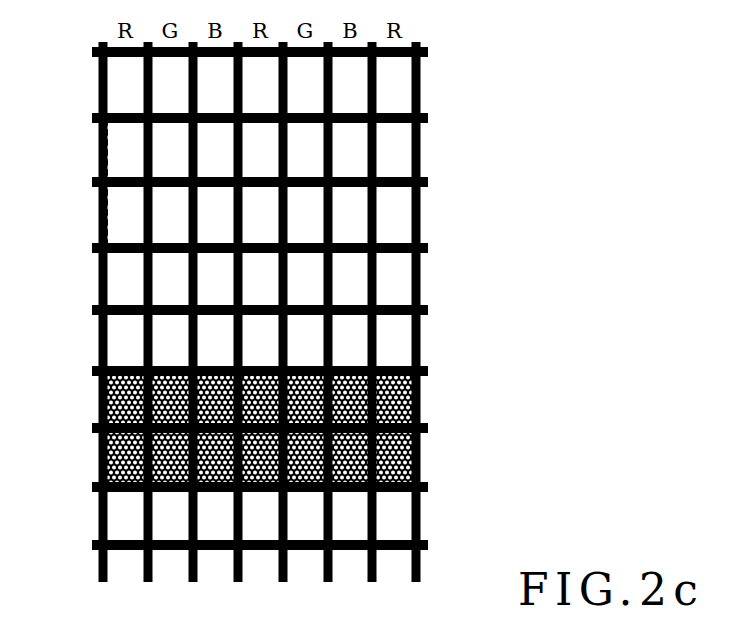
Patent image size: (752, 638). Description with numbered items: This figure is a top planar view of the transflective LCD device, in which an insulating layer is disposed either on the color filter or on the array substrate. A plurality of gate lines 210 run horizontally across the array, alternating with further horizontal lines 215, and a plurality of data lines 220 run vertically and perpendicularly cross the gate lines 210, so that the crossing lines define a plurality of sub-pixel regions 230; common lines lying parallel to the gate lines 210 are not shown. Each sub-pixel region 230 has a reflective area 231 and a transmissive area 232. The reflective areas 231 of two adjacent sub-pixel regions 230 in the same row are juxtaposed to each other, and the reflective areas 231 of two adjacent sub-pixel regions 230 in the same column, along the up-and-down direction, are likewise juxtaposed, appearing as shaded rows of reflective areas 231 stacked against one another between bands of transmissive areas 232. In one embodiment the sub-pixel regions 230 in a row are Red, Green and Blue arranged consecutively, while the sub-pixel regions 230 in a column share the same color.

The gate lines 210 is at (93, 182).
The second signal lines (horizontal) 215 is at (93, 118).
The data lines 220 is at (148, 582).
The sub-pixel region 230 is at (486, 82).
The reflective area 231 is at (417, 143).
The transmissive area 232 is at (407, 85).